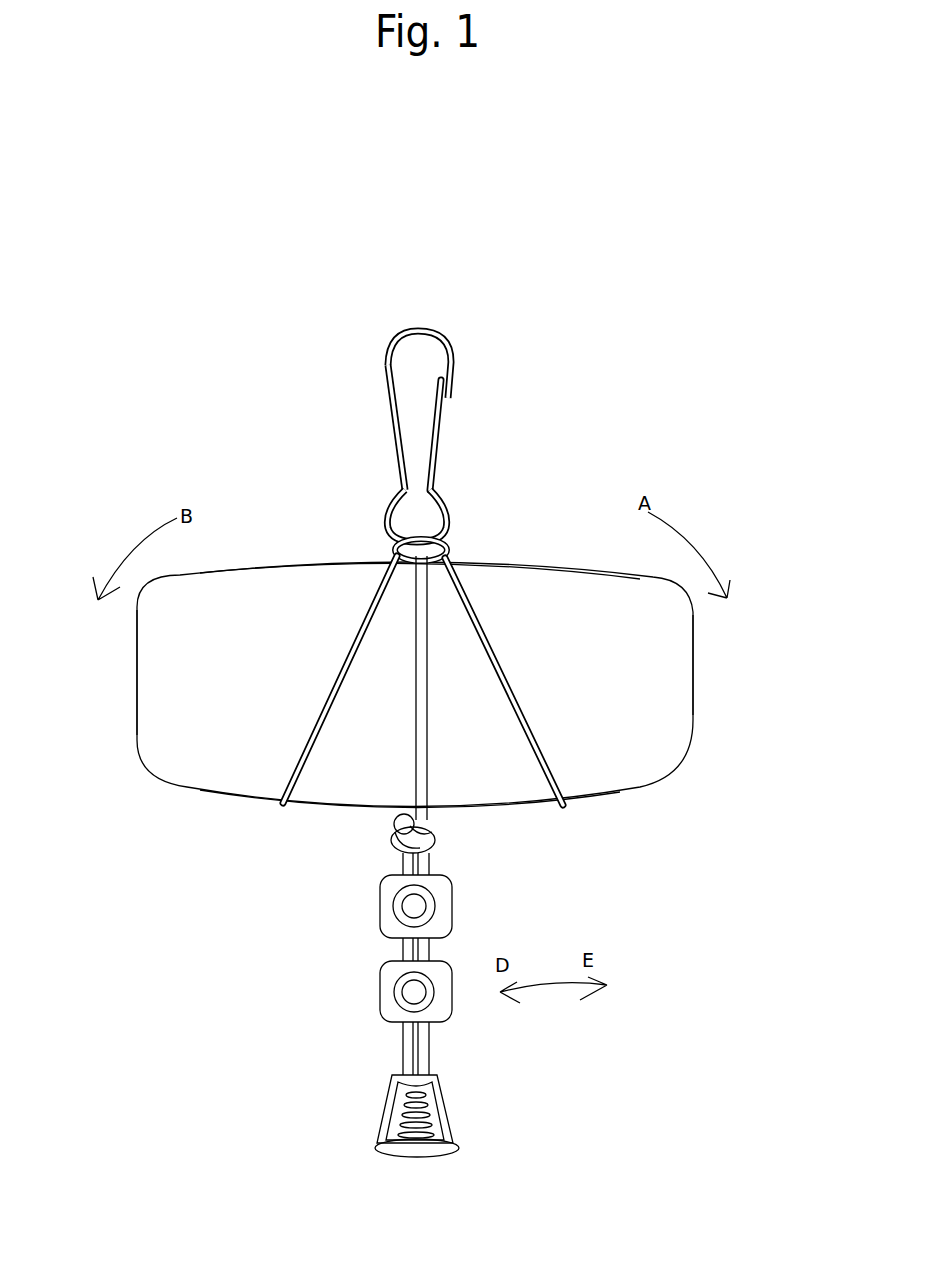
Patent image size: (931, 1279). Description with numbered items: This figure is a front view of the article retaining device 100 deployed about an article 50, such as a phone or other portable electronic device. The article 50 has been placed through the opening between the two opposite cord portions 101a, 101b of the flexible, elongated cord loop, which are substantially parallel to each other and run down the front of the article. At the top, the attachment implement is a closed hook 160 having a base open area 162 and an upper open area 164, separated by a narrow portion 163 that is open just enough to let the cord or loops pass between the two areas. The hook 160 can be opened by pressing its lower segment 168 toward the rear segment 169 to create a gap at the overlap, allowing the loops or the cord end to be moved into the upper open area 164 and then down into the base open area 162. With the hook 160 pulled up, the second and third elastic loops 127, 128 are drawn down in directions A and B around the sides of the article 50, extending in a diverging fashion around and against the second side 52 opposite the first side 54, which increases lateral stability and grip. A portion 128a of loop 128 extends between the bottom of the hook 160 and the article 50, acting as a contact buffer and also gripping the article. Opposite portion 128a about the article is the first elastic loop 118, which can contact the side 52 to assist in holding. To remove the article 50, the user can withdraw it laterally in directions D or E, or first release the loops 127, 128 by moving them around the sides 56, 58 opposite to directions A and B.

The article retaining device 100 is at (650, 366).
The article 50 is at (695, 649).
The second side 52 is at (533, 805).
The first side 54 is at (593, 564).
The side 56 is at (693, 697).
The side 58 is at (137, 697).
The hook 160 is at (407, 407).
The upper open area 164 is at (402, 365).
The rear segment 169 is at (380, 375).
The lower segment 168 is at (437, 427).
The narrow portion 163 is at (417, 497).
The base open area 162 is at (410, 518).
The second elastic loop 127 is at (443, 560).
The third elastic loop 128 is at (390, 557).
The portion of the loop 128a is at (443, 553).
The cord portion 101a is at (427, 767).
The cord portion 101b is at (400, 858).
The first elastic loop 118 is at (393, 822).